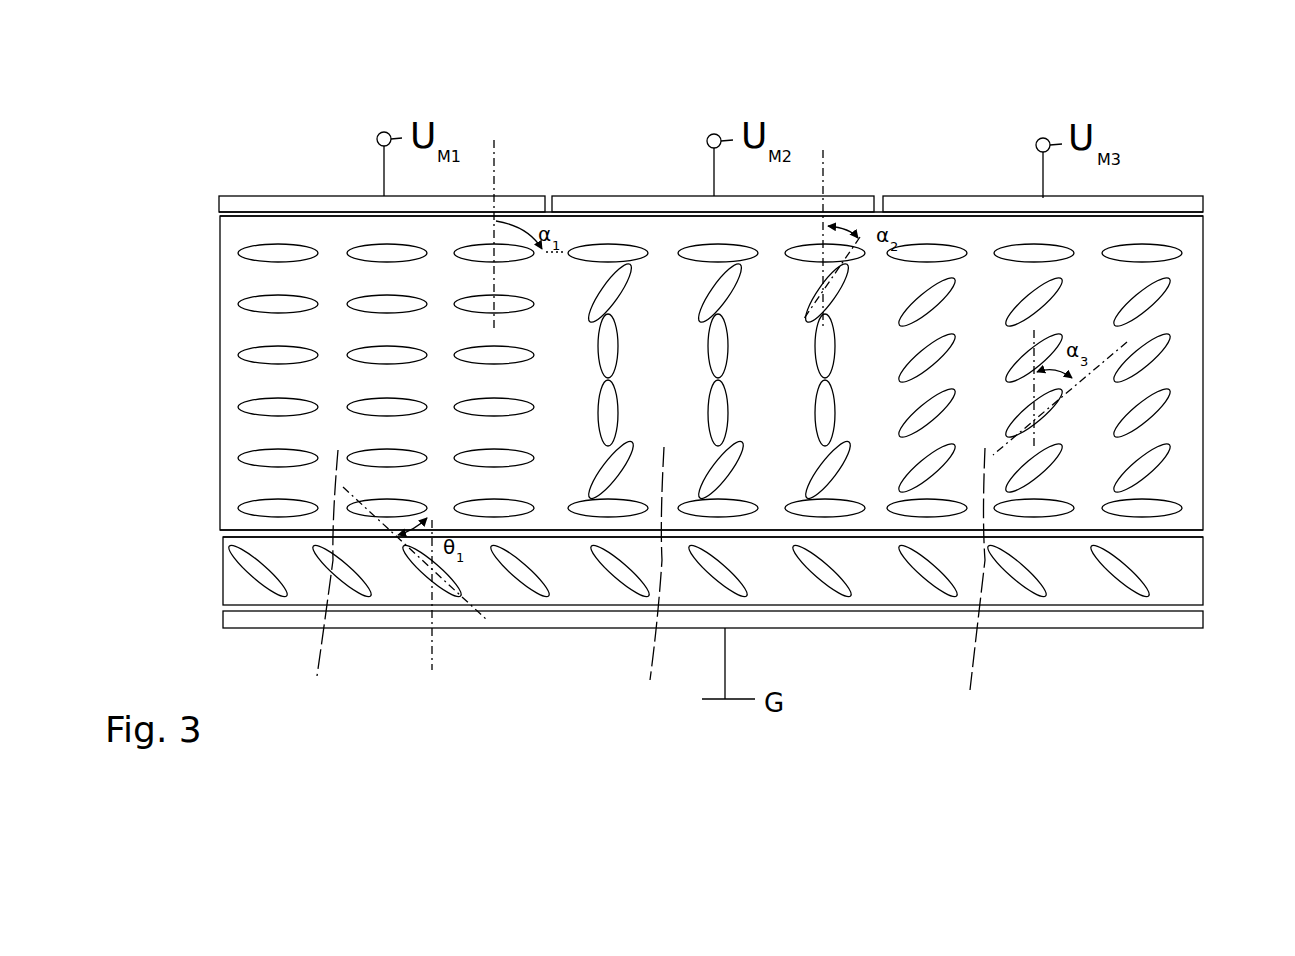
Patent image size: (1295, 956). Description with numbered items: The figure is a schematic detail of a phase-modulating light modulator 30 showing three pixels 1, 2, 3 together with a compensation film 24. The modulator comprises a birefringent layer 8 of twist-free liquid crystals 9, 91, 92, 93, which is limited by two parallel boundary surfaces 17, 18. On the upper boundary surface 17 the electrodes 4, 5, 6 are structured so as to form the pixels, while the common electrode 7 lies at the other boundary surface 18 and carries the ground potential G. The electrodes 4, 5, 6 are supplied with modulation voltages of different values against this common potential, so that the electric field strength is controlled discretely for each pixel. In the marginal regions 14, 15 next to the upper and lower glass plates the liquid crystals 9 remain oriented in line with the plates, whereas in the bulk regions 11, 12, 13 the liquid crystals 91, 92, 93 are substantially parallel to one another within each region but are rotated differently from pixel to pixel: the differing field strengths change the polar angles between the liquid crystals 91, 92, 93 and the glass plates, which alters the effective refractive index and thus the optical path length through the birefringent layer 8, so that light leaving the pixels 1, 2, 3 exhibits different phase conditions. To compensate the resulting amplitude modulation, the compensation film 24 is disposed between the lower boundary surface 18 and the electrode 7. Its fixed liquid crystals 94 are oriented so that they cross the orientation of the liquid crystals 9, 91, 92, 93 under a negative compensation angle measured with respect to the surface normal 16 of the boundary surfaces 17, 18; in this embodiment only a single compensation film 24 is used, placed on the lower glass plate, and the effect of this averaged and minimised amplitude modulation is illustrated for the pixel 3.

The phase-modulating light modulator 30 is at (958, 60).
The pixel 1 is at (323, 190).
The pixel 2 is at (667, 190).
The pixel 3 is at (1160, 192).
The electrode 4 is at (260, 195).
The electrode 5 is at (620, 195).
The electrode 6 is at (995, 195).
The electrode 7 is at (1185, 623).
The birefringent layer 8 is at (1195, 377).
The liquid crystals 9 is at (1185, 258).
The bulk region 11 is at (318, 582).
The bulk region 12 is at (647, 580).
The bulk region 13 is at (987, 583).
The marginal region 14 is at (230, 236).
The marginal region 15 is at (230, 508).
The surface normal 16 is at (496, 152).
The boundary surface 17 is at (240, 215).
The boundary surface 18 is at (227, 537).
The compensation film 24 is at (1175, 566).
The liquid crystals 91 is at (275, 357).
The liquid crystals 92 is at (720, 350).
The liquid crystals 93 is at (1135, 302).
The fixed liquid crystals 94 is at (258, 572).